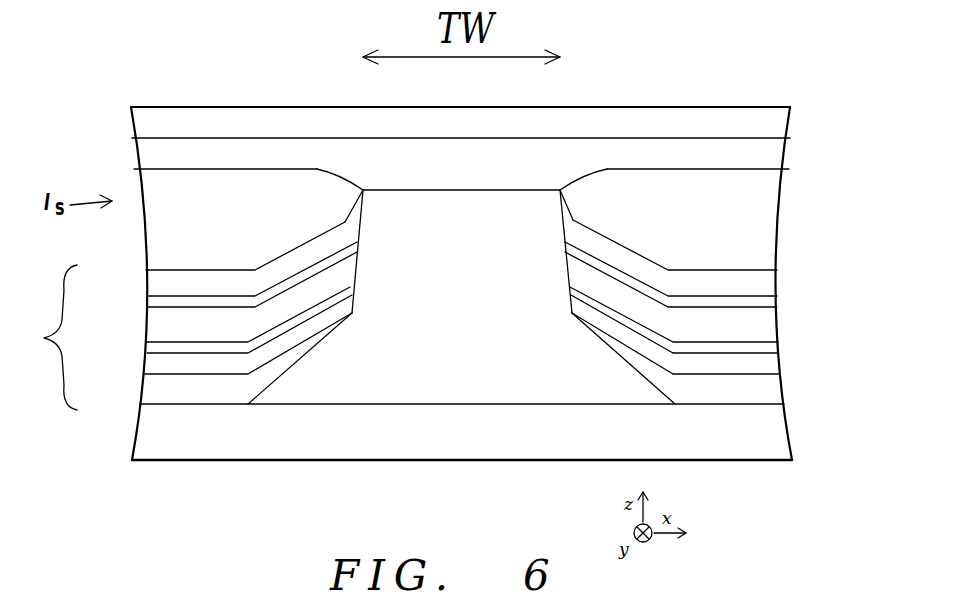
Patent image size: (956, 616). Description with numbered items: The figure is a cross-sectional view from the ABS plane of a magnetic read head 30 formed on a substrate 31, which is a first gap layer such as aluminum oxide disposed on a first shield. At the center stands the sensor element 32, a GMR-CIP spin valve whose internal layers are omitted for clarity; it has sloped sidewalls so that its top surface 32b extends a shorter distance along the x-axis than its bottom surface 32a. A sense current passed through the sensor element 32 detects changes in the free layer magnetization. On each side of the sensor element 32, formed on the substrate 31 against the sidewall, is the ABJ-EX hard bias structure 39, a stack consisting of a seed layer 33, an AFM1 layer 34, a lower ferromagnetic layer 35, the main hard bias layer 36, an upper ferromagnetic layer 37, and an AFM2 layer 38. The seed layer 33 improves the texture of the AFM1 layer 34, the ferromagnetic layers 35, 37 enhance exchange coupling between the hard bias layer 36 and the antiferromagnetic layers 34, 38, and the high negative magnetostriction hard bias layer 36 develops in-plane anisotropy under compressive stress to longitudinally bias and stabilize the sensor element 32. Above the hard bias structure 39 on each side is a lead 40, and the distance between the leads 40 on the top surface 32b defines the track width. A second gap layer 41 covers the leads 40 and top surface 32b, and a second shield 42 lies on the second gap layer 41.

The magnetic read head 30 is at (131, 104).
The substrate 31 is at (775, 435).
The sensor element 32 is at (452, 373).
The bottom surface 32a is at (363, 404).
The top surface 32b is at (503, 188).
The seed layer 33 is at (157, 392).
The AFM1 layer 34 is at (155, 365).
The ferromagnetic layer 35 is at (157, 344).
The hard bias layer 36 is at (157, 327).
The ferromagnetic layer 37 is at (157, 303).
The AFM2 layer 38 is at (157, 283).
The ABJ-EX hard bias structure 39 is at (45, 337).
The lead 40 is at (152, 229).
The second gap layer 41 is at (772, 155).
The second shield 42 is at (770, 125).